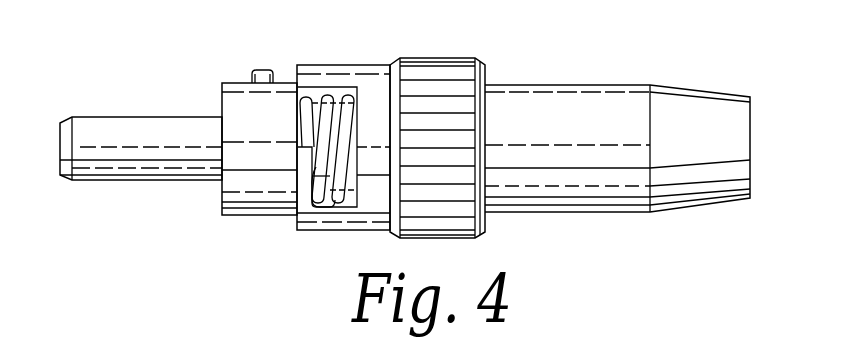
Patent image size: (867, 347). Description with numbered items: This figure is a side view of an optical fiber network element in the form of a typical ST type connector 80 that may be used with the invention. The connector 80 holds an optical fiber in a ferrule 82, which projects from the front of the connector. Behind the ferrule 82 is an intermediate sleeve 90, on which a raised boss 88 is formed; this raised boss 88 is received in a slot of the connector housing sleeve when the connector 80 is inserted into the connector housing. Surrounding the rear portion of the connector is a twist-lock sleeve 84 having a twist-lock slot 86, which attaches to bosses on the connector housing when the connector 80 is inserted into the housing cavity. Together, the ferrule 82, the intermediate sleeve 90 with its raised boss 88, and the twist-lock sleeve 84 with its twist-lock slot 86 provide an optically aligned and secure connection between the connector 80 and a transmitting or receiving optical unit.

The ST type connector 80 is at (486, 56).
The ferrule 82 is at (115, 167).
The twist-lock sleeve 84 is at (377, 62).
The twist-lock slot 86 is at (328, 203).
The raised boss 88 is at (262, 64).
The intermediate sleeve 90 is at (262, 215).